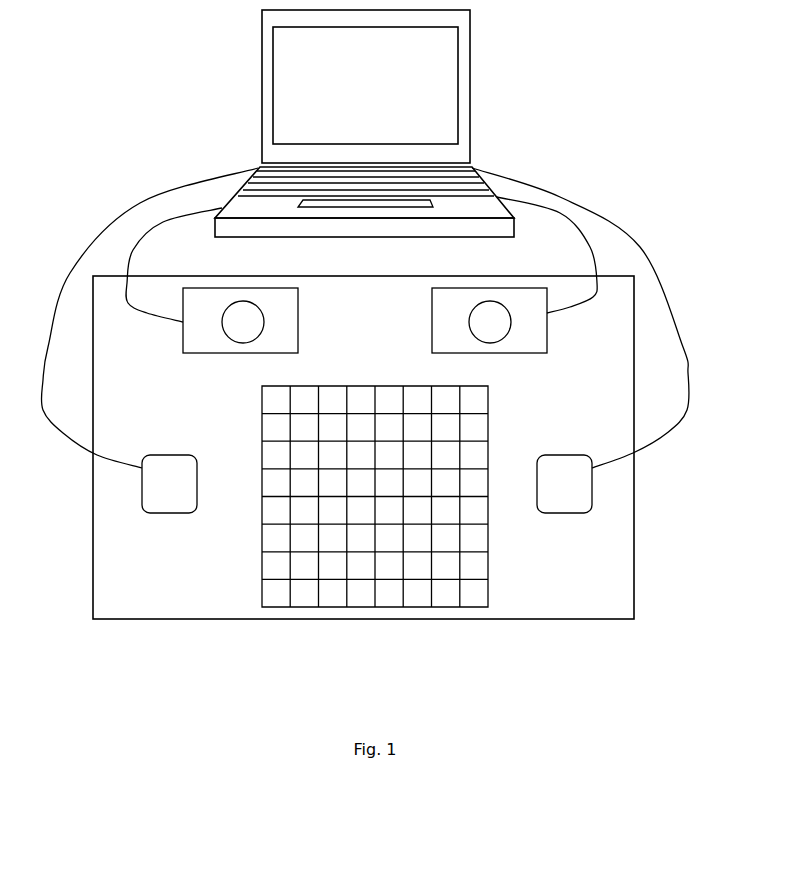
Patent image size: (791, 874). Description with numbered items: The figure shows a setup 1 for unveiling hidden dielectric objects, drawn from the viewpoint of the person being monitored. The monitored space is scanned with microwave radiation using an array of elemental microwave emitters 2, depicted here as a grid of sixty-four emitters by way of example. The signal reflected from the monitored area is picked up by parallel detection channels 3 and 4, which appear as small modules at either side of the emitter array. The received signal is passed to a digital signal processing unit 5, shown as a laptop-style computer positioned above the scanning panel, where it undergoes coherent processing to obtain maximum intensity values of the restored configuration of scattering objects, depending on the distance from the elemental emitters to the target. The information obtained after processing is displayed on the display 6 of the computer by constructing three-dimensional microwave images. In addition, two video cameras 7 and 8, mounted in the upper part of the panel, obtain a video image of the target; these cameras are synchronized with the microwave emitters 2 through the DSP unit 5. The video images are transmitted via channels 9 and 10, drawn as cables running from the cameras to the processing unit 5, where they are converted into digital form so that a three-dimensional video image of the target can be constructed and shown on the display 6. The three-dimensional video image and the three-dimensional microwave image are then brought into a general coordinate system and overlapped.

The setup 1 is at (363, 447).
The elemental microwave emitters 2 is at (332, 518).
The detection channel 3 is at (169, 484).
The detection channel 4 is at (564, 484).
The digital signal processing unit 5 is at (364, 123).
The display 6 is at (366, 86).
The video camera 7 is at (240, 320).
The video camera 8 is at (489, 320).
The channel 9 is at (174, 265).
The channel 10 is at (547, 255).